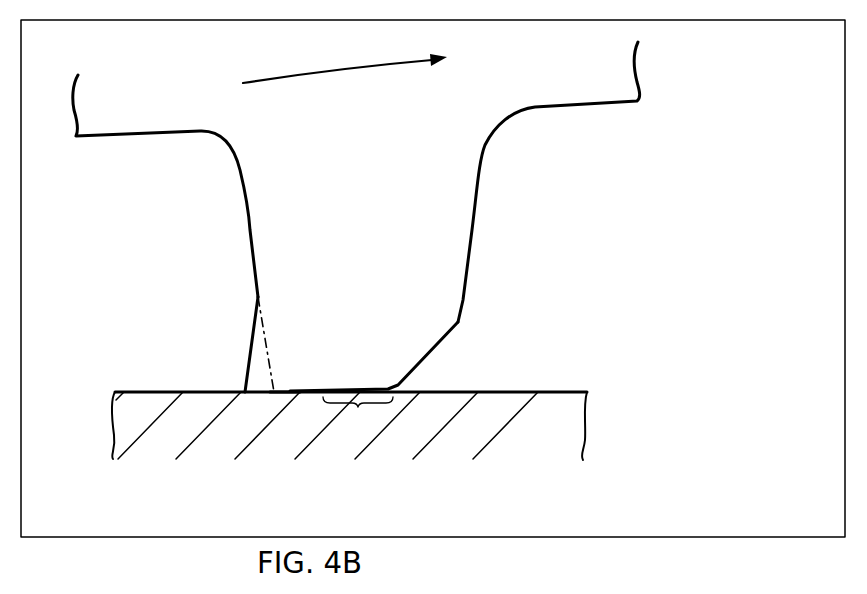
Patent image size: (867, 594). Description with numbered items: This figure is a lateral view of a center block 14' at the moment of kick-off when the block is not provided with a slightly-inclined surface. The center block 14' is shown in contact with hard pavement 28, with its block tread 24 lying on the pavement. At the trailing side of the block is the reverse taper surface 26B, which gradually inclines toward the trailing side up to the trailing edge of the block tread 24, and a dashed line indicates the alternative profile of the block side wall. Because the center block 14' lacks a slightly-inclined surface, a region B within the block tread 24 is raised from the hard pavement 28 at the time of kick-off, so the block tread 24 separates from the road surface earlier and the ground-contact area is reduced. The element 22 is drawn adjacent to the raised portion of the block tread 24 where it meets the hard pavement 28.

The center block 14' is at (356, 182).
The slanted bottom wall portion 22 is at (430, 351).
The block tread 24 is at (274, 396).
The reverse taper surface 26B is at (250, 350).
The hard pavement 28 is at (562, 391).
The region B is at (358, 415).